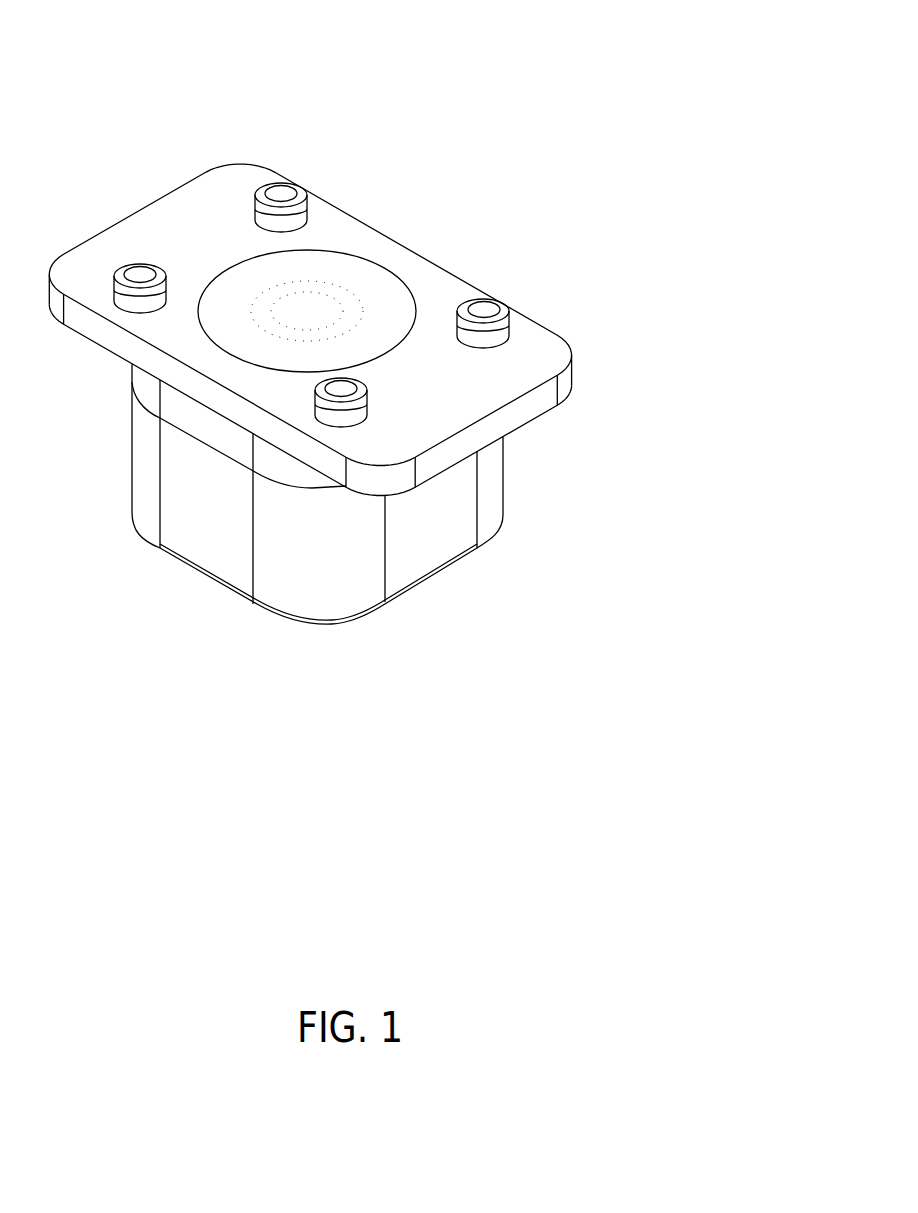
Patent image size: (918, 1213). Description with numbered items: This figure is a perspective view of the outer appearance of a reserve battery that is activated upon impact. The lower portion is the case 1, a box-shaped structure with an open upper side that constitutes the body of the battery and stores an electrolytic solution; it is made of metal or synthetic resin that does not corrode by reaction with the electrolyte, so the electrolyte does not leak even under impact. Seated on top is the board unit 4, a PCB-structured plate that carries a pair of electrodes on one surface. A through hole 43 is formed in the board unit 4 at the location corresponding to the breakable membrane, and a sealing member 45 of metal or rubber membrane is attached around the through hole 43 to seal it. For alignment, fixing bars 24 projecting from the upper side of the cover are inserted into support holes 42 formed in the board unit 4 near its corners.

The case 1 is at (443, 517).
The board unit 4 is at (507, 358).
The fixing bars 24 is at (478, 315).
The support holes 42 is at (507, 322).
The through hole 43 is at (323, 307).
The sealing member 45 is at (231, 295).